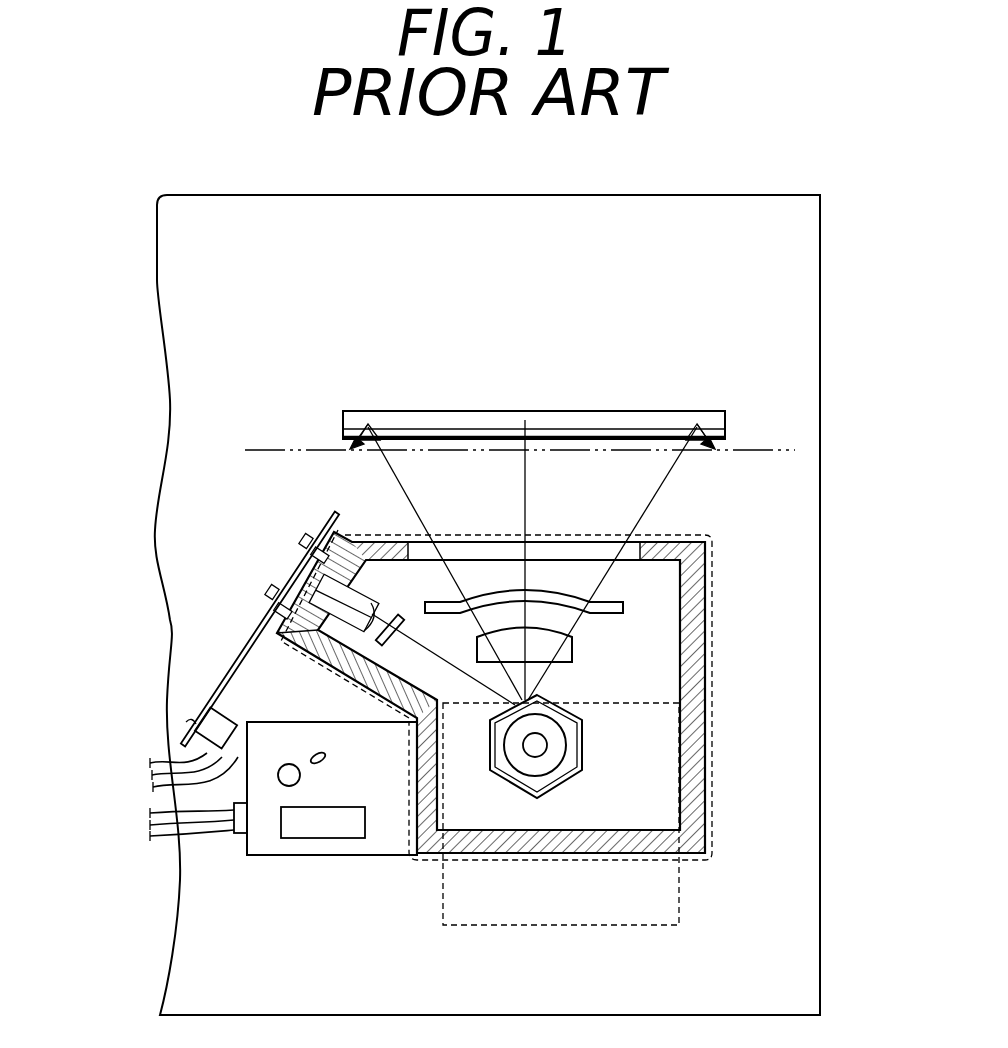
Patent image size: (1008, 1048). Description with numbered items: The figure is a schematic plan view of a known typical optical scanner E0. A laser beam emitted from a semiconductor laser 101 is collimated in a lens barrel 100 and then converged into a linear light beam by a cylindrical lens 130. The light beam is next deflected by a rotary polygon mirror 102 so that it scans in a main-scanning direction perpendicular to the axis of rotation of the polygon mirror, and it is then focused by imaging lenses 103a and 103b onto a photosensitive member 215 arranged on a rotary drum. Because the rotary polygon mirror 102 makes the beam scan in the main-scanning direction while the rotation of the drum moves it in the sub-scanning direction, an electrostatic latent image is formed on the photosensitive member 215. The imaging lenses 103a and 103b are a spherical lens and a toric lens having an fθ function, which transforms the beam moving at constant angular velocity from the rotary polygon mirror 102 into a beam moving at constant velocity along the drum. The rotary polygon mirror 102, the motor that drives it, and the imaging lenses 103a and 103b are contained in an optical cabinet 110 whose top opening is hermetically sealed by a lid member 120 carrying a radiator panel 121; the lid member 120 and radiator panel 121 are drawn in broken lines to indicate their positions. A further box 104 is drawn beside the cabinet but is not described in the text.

The optical scanner E0 is at (132, 245).
The photosensitive member 215 is at (304, 450).
The lens barrel 100 is at (372, 558).
The semiconductor laser 101 is at (292, 568).
The cylindrical lens 130 is at (405, 606).
The imaging lens 103b is at (710, 590).
The imaging lens 103a is at (710, 648).
The optical cabinet 110 is at (712, 708).
The rotary polygon mirror 102 is at (582, 752).
The control circuit box 104 is at (268, 855).
The lid member 120 is at (412, 862).
The radiator panel 121 is at (679, 893).